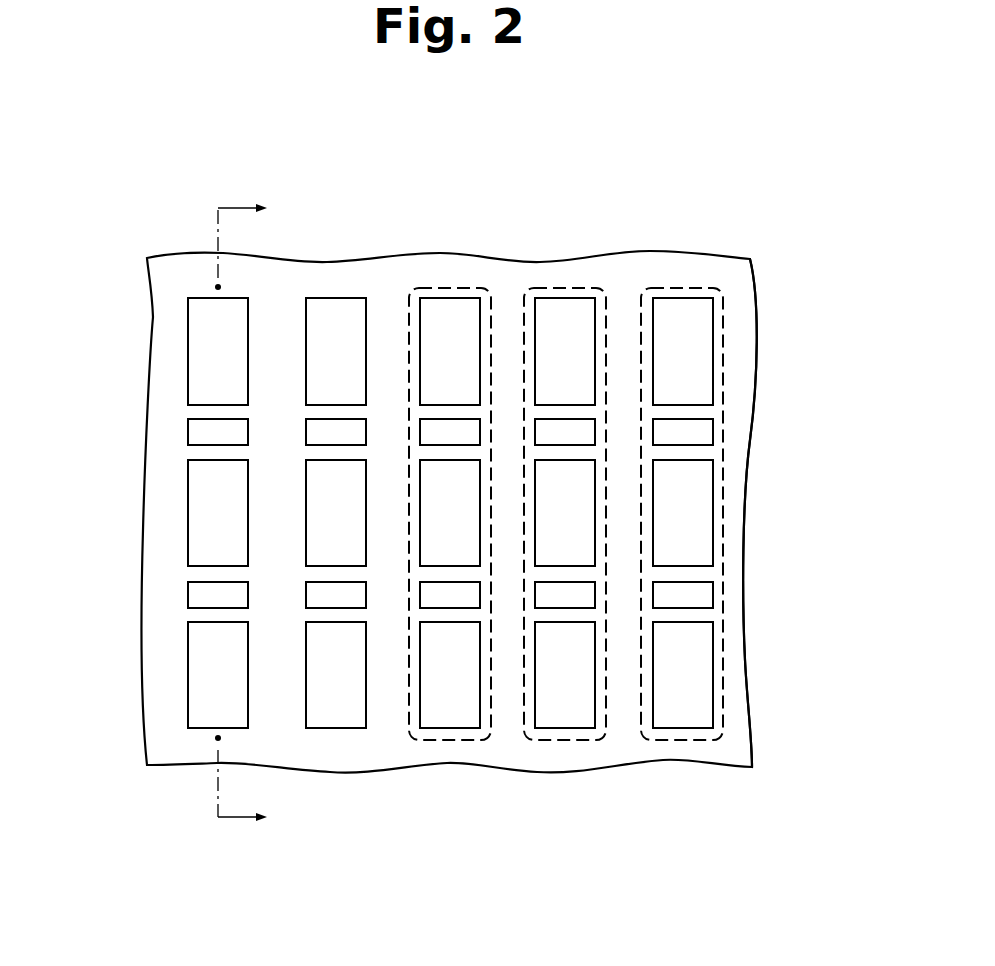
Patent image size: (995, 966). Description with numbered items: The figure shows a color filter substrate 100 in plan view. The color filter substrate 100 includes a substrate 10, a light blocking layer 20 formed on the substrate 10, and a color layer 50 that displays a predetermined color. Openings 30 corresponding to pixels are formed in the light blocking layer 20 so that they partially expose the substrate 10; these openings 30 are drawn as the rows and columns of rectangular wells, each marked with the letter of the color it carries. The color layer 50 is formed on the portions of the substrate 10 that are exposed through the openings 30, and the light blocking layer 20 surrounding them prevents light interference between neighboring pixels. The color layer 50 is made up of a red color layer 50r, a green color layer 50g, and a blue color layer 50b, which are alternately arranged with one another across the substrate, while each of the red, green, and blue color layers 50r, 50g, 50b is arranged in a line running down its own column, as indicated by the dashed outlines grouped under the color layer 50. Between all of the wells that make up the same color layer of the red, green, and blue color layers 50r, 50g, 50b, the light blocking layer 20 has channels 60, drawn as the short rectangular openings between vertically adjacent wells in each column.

The color filter substrate 100 is at (783, 129).
The substrate 10 is at (753, 725).
The light blocking layer 20 is at (742, 528).
The openings 30 is at (246, 383).
The channels 60 is at (246, 433).
The color layer 50 is at (433, 191).
The blue color layer 50b is at (445, 288).
The red color layer 50r is at (562, 288).
The green color layer 50g is at (680, 288).